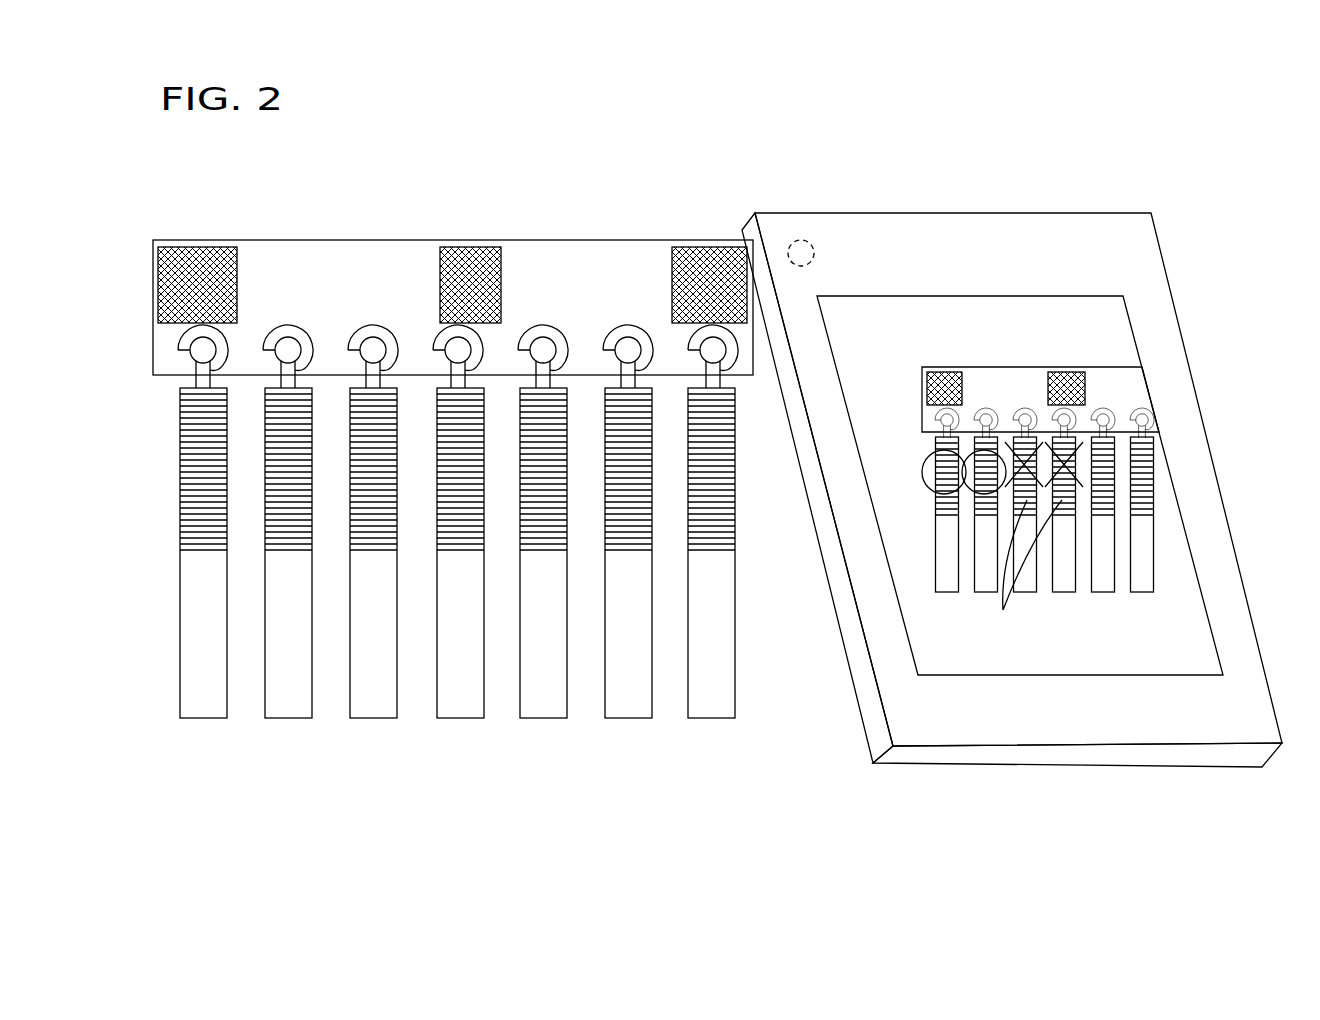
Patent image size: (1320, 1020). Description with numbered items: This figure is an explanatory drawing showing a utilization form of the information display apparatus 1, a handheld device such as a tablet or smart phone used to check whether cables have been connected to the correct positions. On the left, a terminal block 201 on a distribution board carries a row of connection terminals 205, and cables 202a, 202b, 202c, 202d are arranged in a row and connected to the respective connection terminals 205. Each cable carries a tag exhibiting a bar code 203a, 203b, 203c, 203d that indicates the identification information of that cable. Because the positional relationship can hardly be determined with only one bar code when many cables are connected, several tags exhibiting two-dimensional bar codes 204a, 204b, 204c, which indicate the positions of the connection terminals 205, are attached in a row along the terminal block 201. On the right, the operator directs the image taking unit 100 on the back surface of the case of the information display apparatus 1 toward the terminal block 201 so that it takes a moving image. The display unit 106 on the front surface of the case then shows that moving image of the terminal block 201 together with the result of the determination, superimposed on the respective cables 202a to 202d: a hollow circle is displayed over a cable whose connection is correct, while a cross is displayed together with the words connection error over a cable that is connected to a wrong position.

The information display apparatus 1 is at (1057, 206).
The image taking unit 100 is at (812, 246).
The display unit 106 is at (1098, 322).
The terminal block 201 is at (375, 240).
The cable 202a is at (208, 712).
The cable 202b is at (294, 708).
The cable 202c is at (382, 705).
The cable 202d is at (472, 703).
The bar code 203a is at (229, 525).
The bar code 203b is at (307, 530).
The bar code 203c is at (398, 533).
The bar code 203d is at (480, 532).
The two-dimensional bar code 204a is at (212, 250).
The two-dimensional bar code 204b is at (457, 252).
The two-dimensional bar code 204c is at (697, 250).
The connection terminal 205 is at (180, 355).